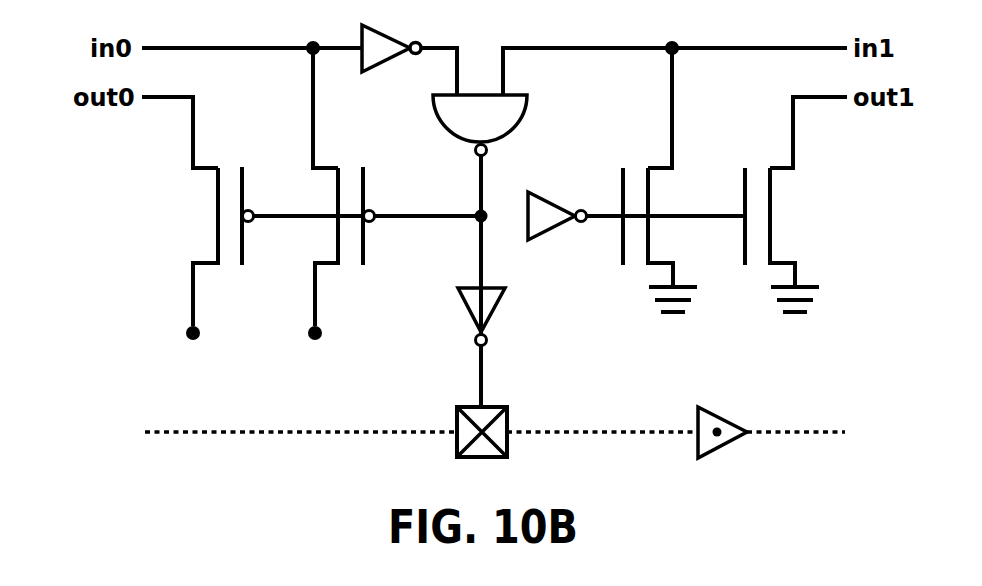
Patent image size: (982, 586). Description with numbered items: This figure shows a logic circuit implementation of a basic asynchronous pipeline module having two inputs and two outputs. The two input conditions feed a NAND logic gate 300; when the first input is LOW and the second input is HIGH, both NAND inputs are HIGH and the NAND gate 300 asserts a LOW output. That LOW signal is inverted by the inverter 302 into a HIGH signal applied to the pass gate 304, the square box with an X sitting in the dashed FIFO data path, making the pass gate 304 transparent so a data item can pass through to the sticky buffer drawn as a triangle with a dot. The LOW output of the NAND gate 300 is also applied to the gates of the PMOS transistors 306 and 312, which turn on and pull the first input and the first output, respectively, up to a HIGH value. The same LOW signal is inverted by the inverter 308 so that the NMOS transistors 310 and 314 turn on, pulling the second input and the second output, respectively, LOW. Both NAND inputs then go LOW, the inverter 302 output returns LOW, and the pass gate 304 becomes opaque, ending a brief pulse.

The NAND logic gate 300 is at (480, 125).
The inverter 302 is at (505, 292).
The pass gate 304 is at (505, 406).
The PMOS transistor 306 is at (338, 267).
The inverter 308 is at (530, 240).
The NMOS transistor 310 is at (649, 166).
The PMOS transistor 312 is at (218, 267).
The NMOS transistor 314 is at (793, 172).